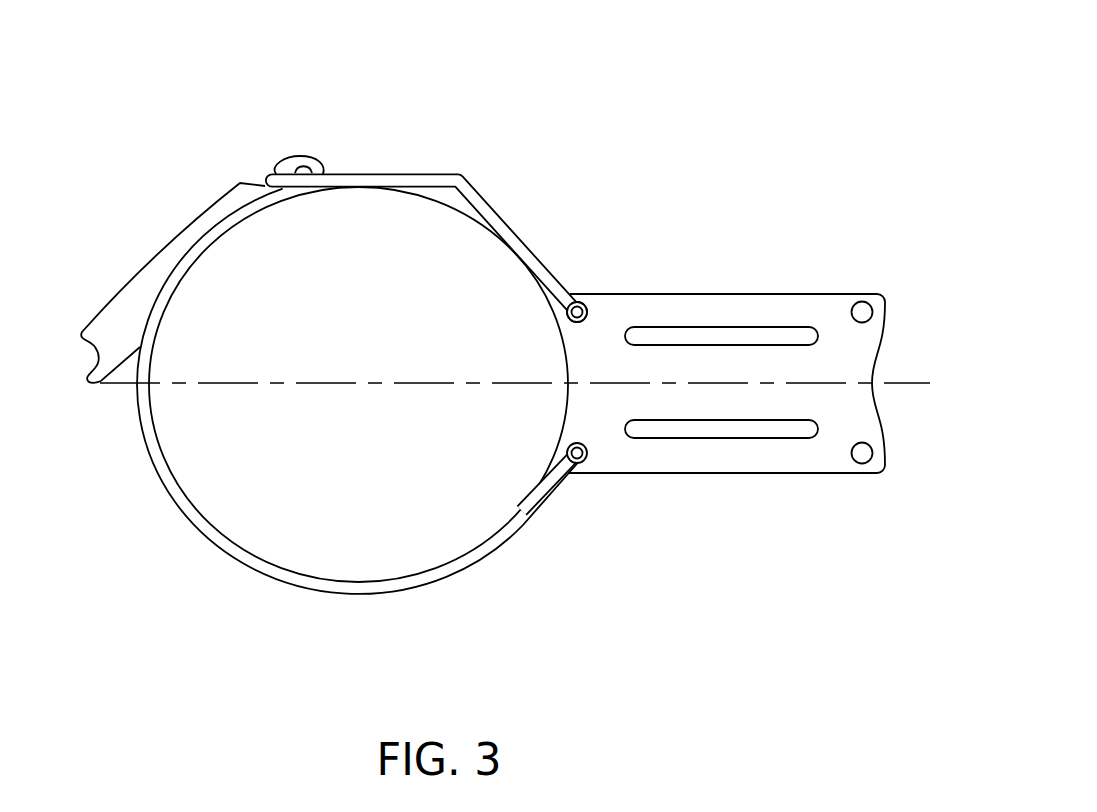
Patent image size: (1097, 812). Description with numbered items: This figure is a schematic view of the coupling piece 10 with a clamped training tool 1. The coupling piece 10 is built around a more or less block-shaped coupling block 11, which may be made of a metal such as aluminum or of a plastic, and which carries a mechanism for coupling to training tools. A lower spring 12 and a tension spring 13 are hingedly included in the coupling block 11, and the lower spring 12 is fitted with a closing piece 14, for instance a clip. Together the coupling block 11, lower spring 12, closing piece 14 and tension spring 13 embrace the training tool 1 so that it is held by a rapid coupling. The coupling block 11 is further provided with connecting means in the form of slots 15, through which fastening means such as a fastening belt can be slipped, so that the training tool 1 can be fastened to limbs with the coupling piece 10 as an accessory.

The training tool 1 is at (283, 505).
The coupling piece 10 is at (505, 337).
The coupling block 11 is at (726, 414).
The lower spring 12 is at (448, 570).
The tension spring 13 is at (443, 180).
The closing piece 14 is at (142, 278).
The slot 15 is at (683, 338).